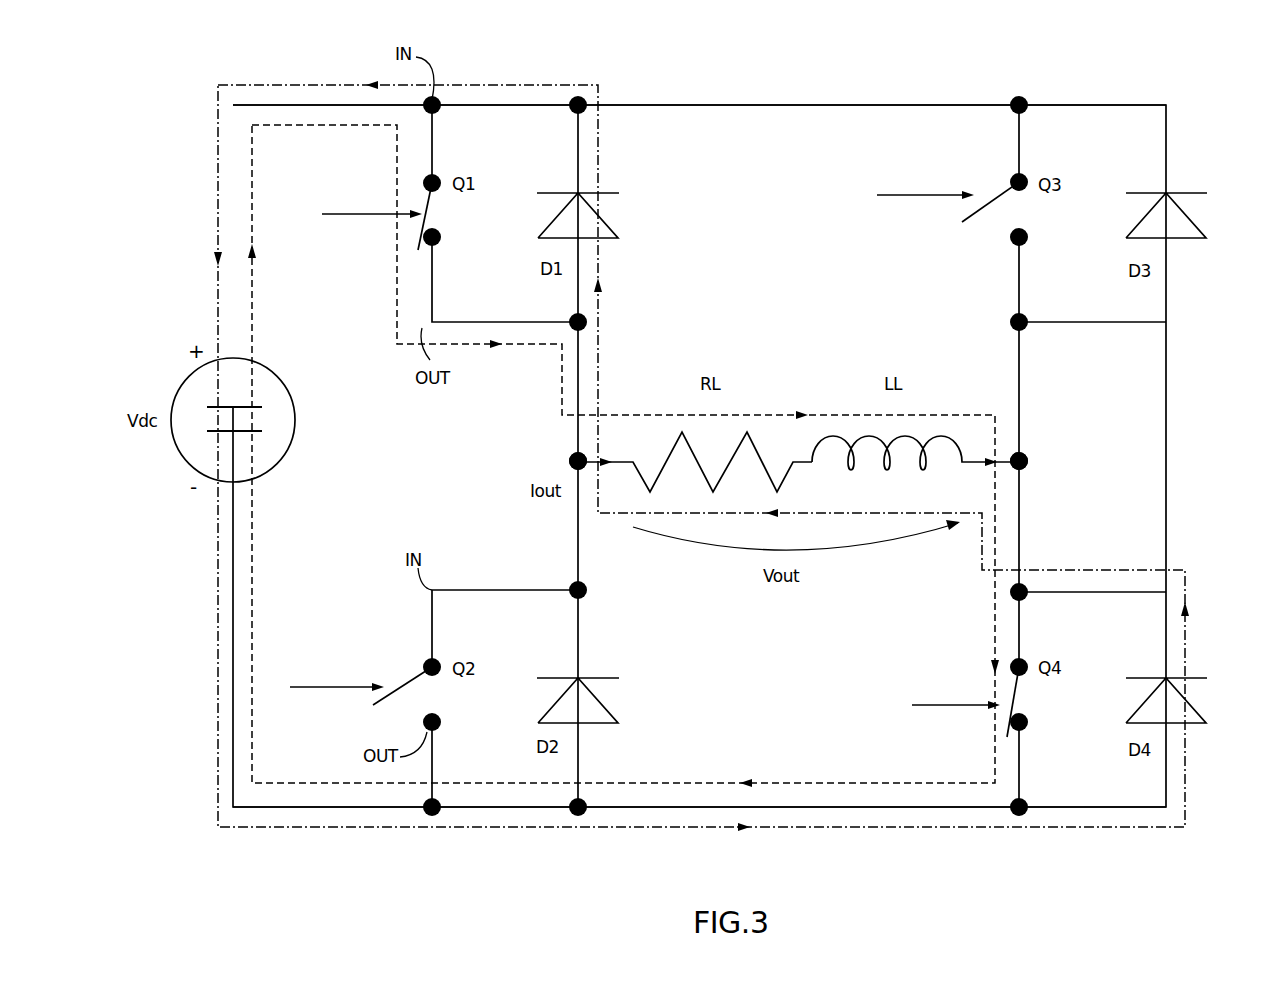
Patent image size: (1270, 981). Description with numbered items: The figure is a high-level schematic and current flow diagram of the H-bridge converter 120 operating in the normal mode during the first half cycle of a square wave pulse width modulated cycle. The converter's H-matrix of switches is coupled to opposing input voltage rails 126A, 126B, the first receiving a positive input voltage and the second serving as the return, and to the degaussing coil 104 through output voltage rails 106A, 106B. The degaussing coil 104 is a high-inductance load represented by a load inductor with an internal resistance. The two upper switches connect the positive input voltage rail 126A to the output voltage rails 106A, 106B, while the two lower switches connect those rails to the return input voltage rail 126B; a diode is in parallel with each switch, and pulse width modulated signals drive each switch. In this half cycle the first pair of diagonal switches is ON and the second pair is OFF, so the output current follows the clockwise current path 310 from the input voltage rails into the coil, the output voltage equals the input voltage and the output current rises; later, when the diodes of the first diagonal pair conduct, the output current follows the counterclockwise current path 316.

The H-bridge converter 120 is at (668, 46).
The input voltage rail 126A is at (826, 105).
The input voltage rail 126B is at (782, 808).
The output voltage rail 106A is at (570, 456).
The output voltage rail 106B is at (1028, 456).
The degaussing coil 104 is at (713, 525).
The clockwise current path 310 is at (778, 415).
The counterclockwise current path 316 is at (822, 513).